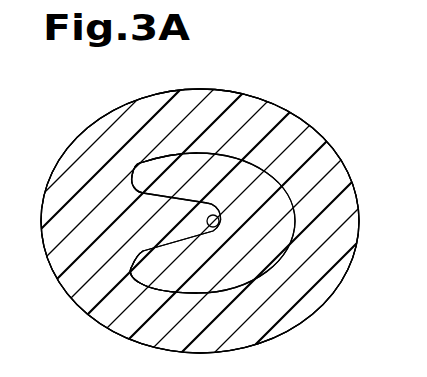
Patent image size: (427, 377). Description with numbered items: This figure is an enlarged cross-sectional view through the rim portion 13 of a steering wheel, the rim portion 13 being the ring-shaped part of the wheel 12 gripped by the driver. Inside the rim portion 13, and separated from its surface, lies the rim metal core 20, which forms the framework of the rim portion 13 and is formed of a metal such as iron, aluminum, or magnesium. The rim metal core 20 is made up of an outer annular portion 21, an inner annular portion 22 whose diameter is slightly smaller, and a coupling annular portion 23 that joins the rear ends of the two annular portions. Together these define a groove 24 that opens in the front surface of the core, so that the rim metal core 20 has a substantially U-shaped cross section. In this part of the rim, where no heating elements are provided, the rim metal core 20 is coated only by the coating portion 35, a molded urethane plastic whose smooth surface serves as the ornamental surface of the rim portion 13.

The rim portion 13 is at (301, 114).
The connector member 12 is at (200, 221).
The coating portion 35 is at (335, 151).
The rim metal core 20 is at (284, 219).
The coupling annular portion 23 is at (237, 223).
The outer annular portion 21 is at (149, 166).
The inner annular portion 22 is at (149, 286).
The groove 24 is at (220, 221).